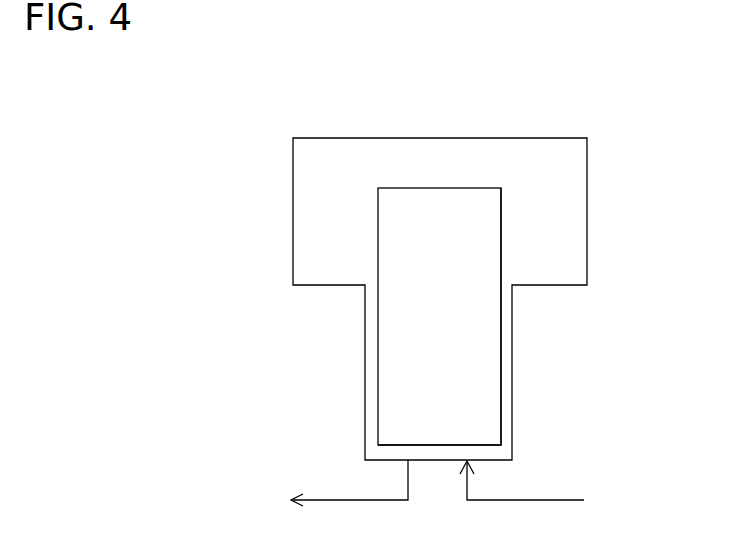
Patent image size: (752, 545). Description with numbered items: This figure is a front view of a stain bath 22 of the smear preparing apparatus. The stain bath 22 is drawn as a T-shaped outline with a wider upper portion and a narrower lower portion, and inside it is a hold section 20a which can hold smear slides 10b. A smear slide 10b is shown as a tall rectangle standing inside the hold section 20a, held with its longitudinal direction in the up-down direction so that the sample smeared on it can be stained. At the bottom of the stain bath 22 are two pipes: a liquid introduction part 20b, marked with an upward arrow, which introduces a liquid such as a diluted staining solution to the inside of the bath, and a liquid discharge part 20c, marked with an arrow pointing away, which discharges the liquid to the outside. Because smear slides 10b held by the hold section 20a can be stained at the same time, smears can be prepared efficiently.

The stain bath 22 is at (568, 138).
The smear slide 10b is at (393, 322).
The hold section 20a is at (505, 327).
The liquid introduction part 20b is at (549, 498).
The liquid discharge part 20c is at (331, 498).